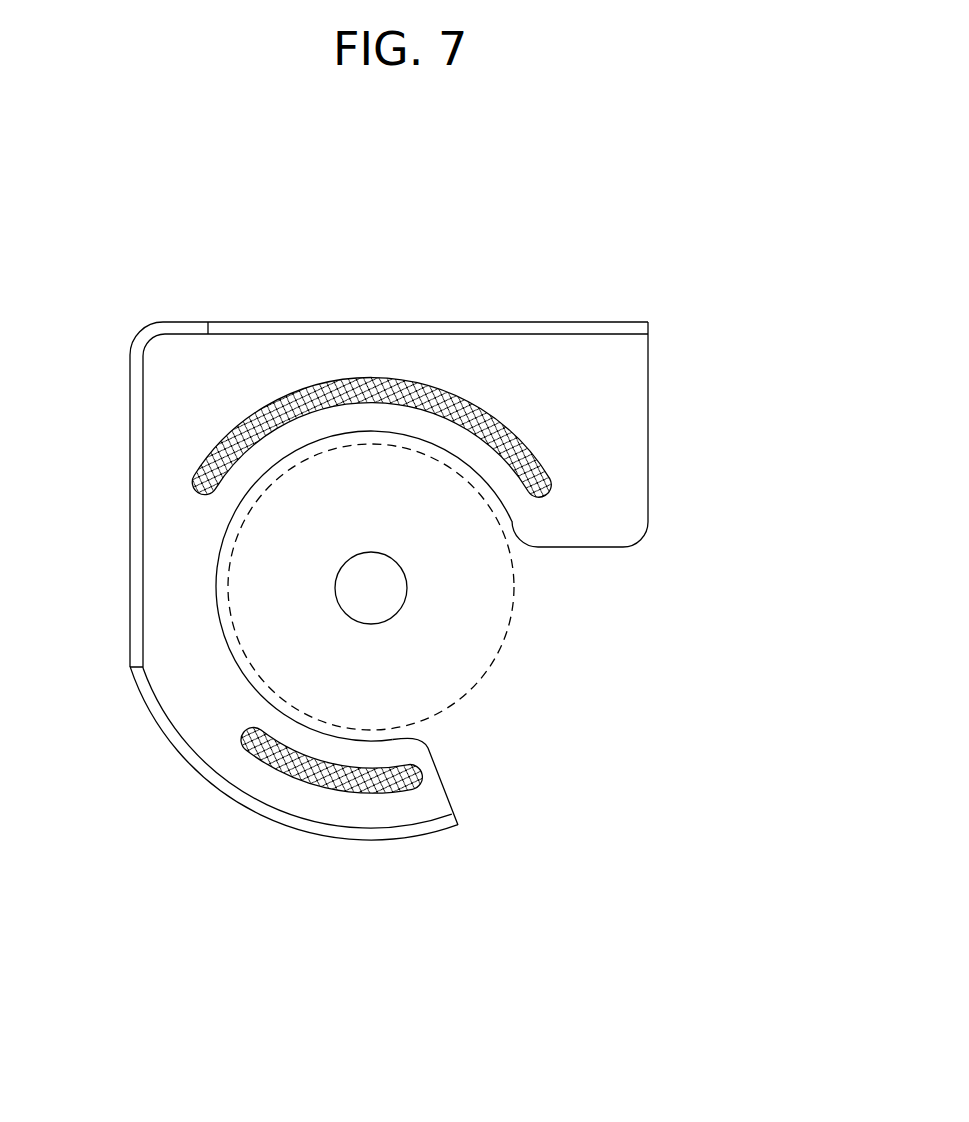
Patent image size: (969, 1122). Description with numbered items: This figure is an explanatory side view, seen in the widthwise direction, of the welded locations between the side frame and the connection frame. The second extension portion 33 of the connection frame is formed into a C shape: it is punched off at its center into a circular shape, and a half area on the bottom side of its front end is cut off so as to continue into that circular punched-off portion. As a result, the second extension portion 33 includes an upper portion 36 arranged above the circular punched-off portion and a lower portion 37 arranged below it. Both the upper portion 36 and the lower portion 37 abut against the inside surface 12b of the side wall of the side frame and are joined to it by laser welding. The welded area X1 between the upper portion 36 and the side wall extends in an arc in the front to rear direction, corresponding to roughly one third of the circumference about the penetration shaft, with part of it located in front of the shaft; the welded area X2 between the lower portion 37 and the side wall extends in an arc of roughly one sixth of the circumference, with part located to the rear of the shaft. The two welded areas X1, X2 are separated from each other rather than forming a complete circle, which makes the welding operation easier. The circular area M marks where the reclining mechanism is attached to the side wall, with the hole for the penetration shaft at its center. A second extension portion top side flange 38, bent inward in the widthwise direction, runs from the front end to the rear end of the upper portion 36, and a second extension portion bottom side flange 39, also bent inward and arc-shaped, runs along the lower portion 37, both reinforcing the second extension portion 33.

The second extension portion 33 is at (178, 285).
The welded area X1 is at (368, 385).
The welded area X2 is at (365, 793).
The second extension portion top side flange 38 is at (495, 332).
The inside surface 12b is at (618, 263).
The upper portion 36 is at (615, 463).
The circular area M is at (473, 685).
The second extension portion bottom side flange 39 is at (222, 788).
The lower portion 37 is at (433, 800).